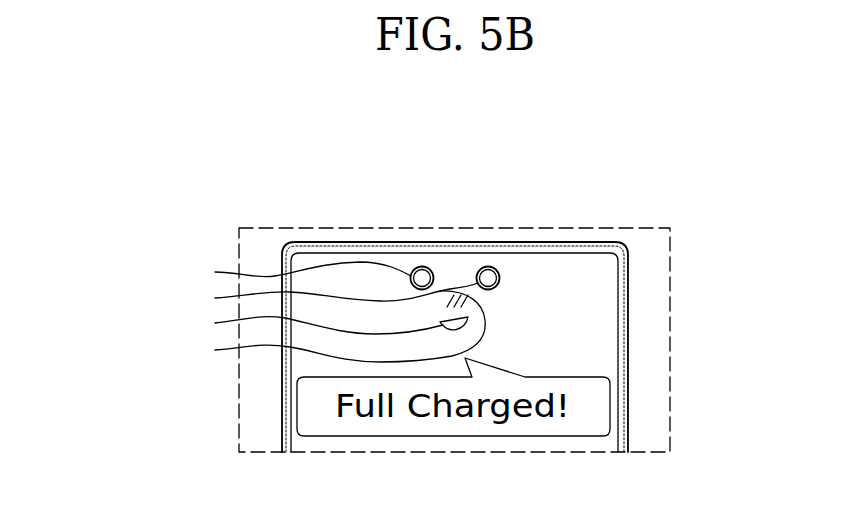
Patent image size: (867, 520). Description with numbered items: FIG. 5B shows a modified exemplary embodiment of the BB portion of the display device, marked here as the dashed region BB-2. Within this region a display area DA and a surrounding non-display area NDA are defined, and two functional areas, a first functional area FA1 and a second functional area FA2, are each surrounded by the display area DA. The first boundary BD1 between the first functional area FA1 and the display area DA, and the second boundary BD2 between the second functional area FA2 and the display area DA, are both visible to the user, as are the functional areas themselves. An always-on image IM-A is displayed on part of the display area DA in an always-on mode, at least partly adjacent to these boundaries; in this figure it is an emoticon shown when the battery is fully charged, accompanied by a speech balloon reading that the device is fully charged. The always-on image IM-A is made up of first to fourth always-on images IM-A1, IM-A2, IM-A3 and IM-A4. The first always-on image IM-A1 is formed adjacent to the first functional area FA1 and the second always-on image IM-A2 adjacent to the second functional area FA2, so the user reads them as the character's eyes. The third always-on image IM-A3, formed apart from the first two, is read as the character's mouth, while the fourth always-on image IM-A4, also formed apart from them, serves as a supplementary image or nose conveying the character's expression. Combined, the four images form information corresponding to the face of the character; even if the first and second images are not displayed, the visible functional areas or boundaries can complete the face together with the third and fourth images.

The BB portion BB-2 is at (627, 228).
The display area DA is at (610, 355).
The non-display area NDA is at (623, 381).
The first boundary BD1 is at (414, 270).
The second boundary BD2 is at (496, 270).
The first functional area FA1 is at (421, 276).
The second functional area FA2 is at (488, 276).
The always-on image IM-A is at (150, 262).
The first always-on image IM-A1 is at (281, 274).
The second always-on image IM-A2 is at (315, 298).
The third always-on image IM-A3 is at (310, 327).
The fourth always-on image IM-A4 is at (318, 328).